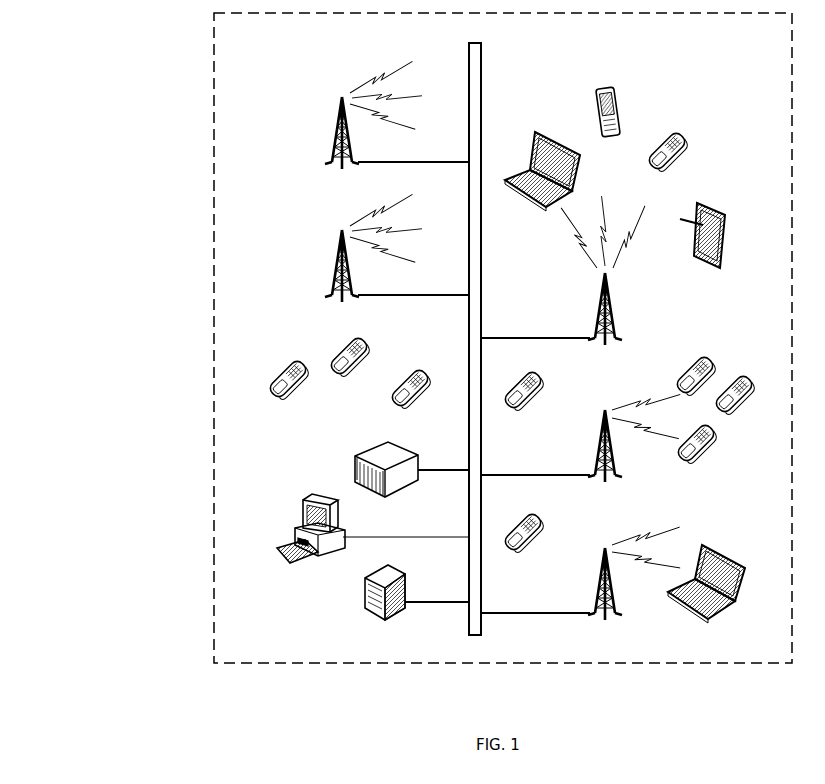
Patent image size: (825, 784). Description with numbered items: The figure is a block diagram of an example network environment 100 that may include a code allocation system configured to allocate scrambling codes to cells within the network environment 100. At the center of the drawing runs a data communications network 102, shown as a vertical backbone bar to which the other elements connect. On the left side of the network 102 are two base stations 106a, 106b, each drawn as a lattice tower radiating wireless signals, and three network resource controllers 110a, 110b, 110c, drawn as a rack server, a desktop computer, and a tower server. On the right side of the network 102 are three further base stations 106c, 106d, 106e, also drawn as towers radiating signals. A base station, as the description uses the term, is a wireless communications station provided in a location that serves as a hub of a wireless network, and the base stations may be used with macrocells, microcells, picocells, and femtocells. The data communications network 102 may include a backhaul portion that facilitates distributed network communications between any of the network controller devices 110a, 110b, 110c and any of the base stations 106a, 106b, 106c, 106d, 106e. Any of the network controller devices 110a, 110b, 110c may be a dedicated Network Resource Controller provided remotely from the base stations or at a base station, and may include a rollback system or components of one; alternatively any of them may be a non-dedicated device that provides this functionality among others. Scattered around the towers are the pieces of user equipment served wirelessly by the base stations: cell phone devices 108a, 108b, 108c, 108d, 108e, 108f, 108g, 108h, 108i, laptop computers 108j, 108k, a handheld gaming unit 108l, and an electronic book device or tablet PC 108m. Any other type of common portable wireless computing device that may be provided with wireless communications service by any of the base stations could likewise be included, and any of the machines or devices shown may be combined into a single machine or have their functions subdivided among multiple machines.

The network environment 100 is at (84, 89).
The data communications network 102 is at (467, 50).
The base station 106a is at (336, 127).
The base station 106b is at (336, 260).
The base station 106c is at (596, 583).
The base station 106d is at (596, 446).
The base station 106e is at (621, 316).
The cell phone device 108a is at (279, 371).
The cell phone device 108b is at (342, 345).
The cell phone device 108c is at (398, 401).
The cell phone device 108d is at (540, 520).
The cell phone device 108e is at (705, 462).
The cell phone device 108f is at (742, 415).
The cell phone device 108g is at (710, 358).
The cell phone device 108h is at (540, 379).
The cell phone device 108i is at (690, 141).
The laptop computer 108j is at (722, 548).
The laptop computer 108k is at (541, 132).
The handheld gaming unit 108l is at (622, 101).
The tablet PC 108m is at (728, 213).
The network resource controller 110a is at (352, 467).
The network resource controller 110b is at (300, 502).
The network resource controller 110c is at (365, 602).